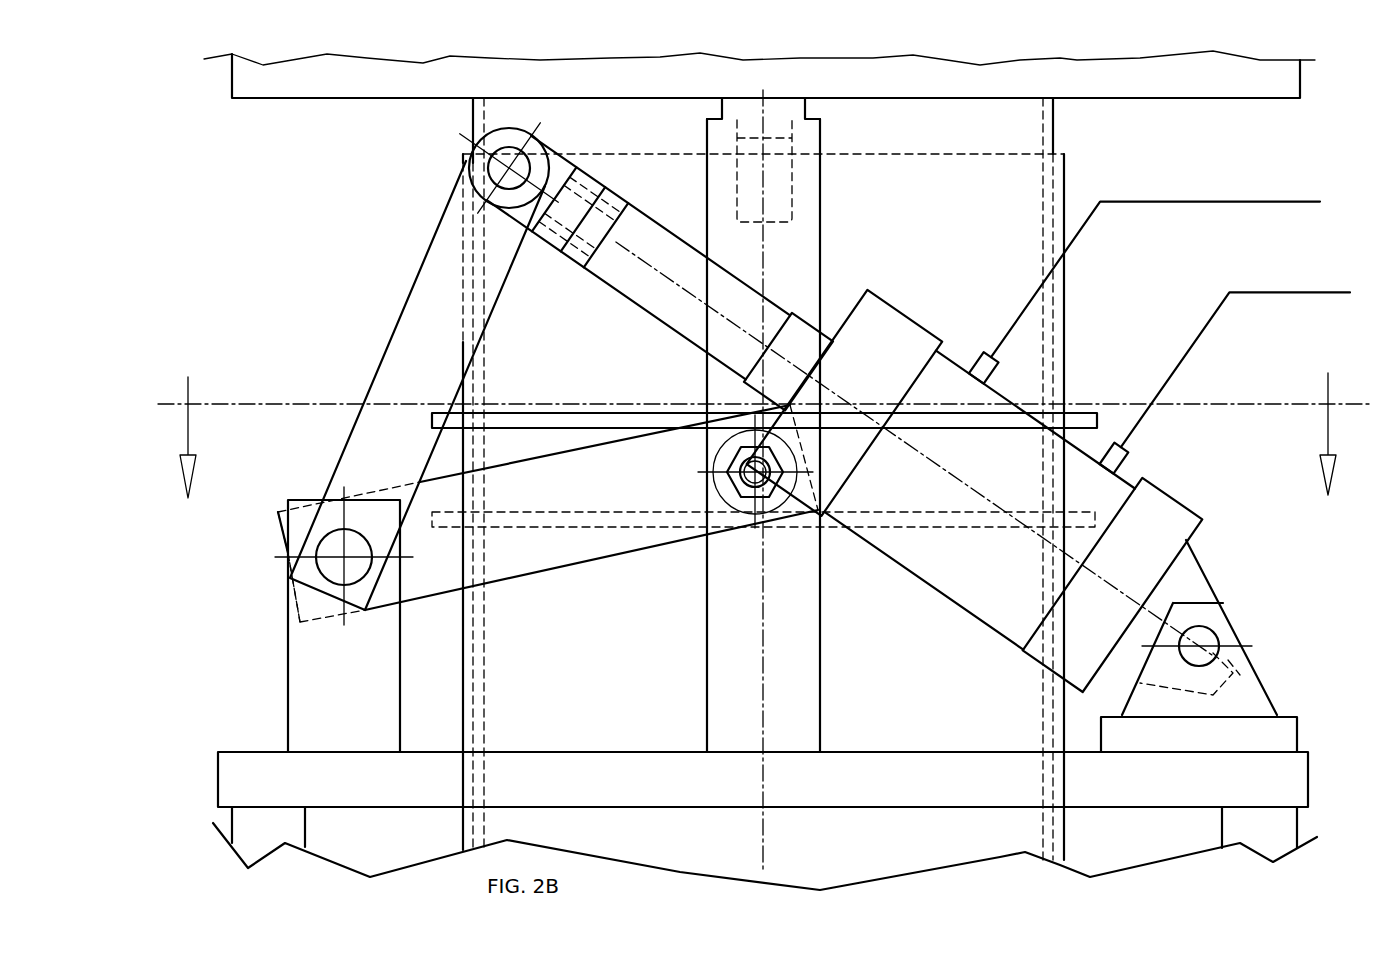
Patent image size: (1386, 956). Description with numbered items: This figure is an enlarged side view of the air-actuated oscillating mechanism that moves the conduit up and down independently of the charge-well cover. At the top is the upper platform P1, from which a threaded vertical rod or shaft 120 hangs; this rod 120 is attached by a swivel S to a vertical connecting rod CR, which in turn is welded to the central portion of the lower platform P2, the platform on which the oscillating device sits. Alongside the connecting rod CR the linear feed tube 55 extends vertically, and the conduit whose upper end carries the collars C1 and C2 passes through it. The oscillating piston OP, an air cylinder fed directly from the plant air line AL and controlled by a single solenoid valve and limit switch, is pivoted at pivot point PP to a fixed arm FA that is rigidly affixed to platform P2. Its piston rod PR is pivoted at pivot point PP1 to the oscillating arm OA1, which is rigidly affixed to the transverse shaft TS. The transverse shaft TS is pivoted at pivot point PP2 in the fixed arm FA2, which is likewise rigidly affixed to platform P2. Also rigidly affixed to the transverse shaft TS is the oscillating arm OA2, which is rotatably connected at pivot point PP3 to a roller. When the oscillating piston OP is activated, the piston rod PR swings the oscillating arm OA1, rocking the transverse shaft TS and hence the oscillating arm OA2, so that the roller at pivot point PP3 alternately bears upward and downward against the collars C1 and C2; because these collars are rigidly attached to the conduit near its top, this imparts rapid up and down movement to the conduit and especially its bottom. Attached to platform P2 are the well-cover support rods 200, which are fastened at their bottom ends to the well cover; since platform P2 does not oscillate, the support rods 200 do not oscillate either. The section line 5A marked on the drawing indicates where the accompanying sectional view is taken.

The platform P1 is at (227, 72).
The threaded vertical rod or shaft 120 is at (807, 107).
The swivel S is at (795, 222).
The vertical connecting rod CR is at (762, 670).
The linear feed tube 55 is at (1053, 113).
The pivot point PP1 is at (507, 157).
The piston rod PR is at (667, 240).
The collar C1 is at (1068, 412).
The collar C2 is at (948, 527).
The oscillating piston OP is at (950, 353).
The plant air line AL is at (1186, 319).
The oscillating arm OA1 is at (398, 348).
The oscillating arm OA2 is at (573, 567).
The pivot point PP2 is at (315, 582).
The transverse shaft TS is at (358, 592).
The fixed arm FA2 is at (360, 698).
The pivot point PP3 is at (753, 495).
The pivot point PP is at (1200, 625).
The fixed arm FA is at (1255, 742).
The platform P2 is at (1308, 752).
The well-cover support rods 200 is at (230, 827).
The section line 5A is at (756, 454).